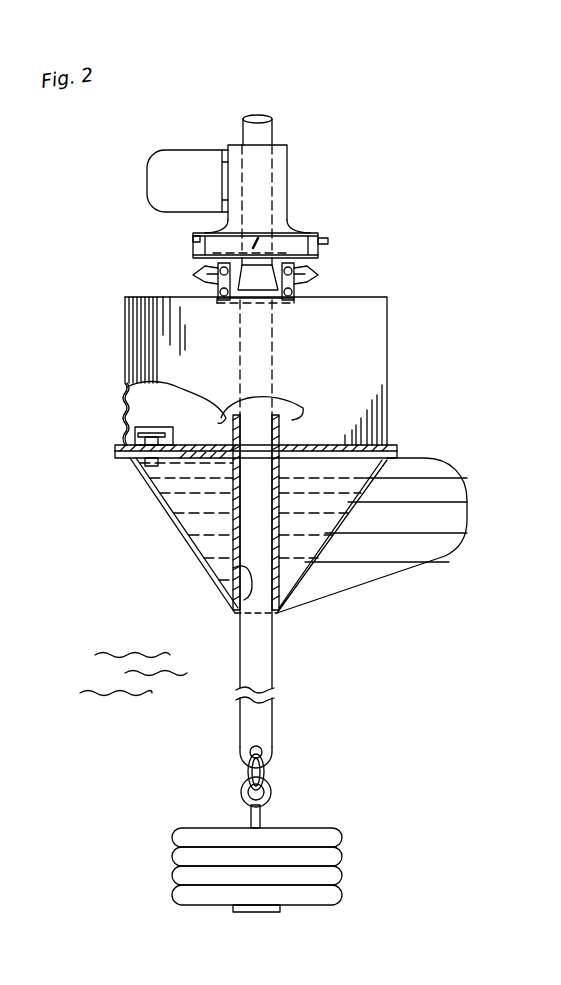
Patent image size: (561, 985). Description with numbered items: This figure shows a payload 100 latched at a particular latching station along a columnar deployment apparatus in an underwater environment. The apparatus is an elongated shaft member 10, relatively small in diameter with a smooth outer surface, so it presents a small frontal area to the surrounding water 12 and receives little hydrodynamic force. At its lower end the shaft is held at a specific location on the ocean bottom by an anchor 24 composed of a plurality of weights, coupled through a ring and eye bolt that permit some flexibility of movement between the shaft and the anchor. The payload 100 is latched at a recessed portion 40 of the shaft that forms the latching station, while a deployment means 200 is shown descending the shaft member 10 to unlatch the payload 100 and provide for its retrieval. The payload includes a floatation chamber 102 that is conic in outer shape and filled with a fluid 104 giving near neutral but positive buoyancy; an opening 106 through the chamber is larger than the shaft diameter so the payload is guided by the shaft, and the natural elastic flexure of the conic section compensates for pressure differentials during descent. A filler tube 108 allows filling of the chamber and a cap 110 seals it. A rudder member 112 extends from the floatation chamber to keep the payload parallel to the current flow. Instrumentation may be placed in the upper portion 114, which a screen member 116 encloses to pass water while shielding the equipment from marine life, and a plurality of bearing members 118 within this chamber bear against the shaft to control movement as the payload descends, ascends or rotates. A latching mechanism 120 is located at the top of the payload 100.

The elongated shaft member 10 is at (262, 653).
The water 12 is at (115, 689).
The anchor 24 is at (342, 855).
The recessed portion 40 is at (273, 297).
The payload 100 is at (346, 391).
The floatation chamber 102 is at (188, 556).
The fluid 104 is at (192, 515).
The opening 106 is at (228, 603).
The filler tube 108 is at (147, 428).
The cap 110 is at (150, 430).
The rudder member 112 is at (353, 572).
The upper portion 114 is at (197, 423).
The screen member 116 is at (375, 389).
The bearing members 118 is at (303, 408).
The latching mechanism 120 is at (287, 258).
The deployment means 200 is at (288, 192).